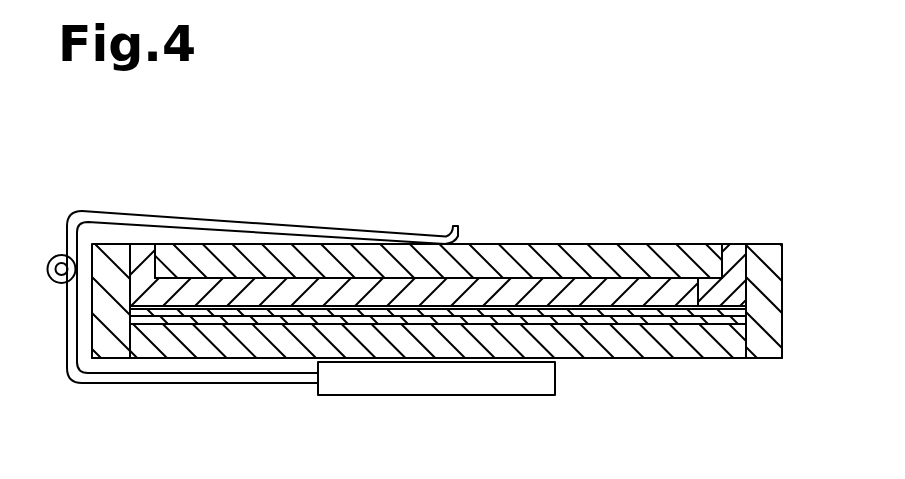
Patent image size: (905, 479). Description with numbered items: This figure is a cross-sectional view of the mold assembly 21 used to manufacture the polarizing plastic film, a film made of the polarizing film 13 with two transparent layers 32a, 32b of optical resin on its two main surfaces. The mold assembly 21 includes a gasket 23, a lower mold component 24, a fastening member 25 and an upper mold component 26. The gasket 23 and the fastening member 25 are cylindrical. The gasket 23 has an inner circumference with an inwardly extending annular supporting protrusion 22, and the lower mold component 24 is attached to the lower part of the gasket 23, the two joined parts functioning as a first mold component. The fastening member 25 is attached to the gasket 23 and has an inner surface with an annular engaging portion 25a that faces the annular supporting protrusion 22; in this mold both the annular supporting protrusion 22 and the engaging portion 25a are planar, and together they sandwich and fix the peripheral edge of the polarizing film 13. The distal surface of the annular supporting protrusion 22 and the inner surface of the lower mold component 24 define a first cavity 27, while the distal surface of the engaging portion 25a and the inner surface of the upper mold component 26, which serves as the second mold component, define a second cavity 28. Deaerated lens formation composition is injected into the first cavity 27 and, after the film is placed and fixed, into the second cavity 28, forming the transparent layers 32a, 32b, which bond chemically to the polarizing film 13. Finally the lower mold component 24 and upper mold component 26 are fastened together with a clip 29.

The polarizing film 13 is at (740, 303).
The mold assembly 21 is at (580, 177).
The annular supporting protrusion 22 is at (720, 326).
The gasket 23 is at (773, 328).
The lower mold component 24 is at (213, 357).
The fastening member 25 is at (743, 253).
The engaging portion 25a is at (707, 282).
The upper mold component 26 is at (228, 252).
The first cavity 27 is at (416, 322).
The second cavity 28 is at (316, 287).
The clip 29 is at (84, 209).
The transparent layer 32a is at (587, 322).
The transparent layer 32b is at (550, 285).